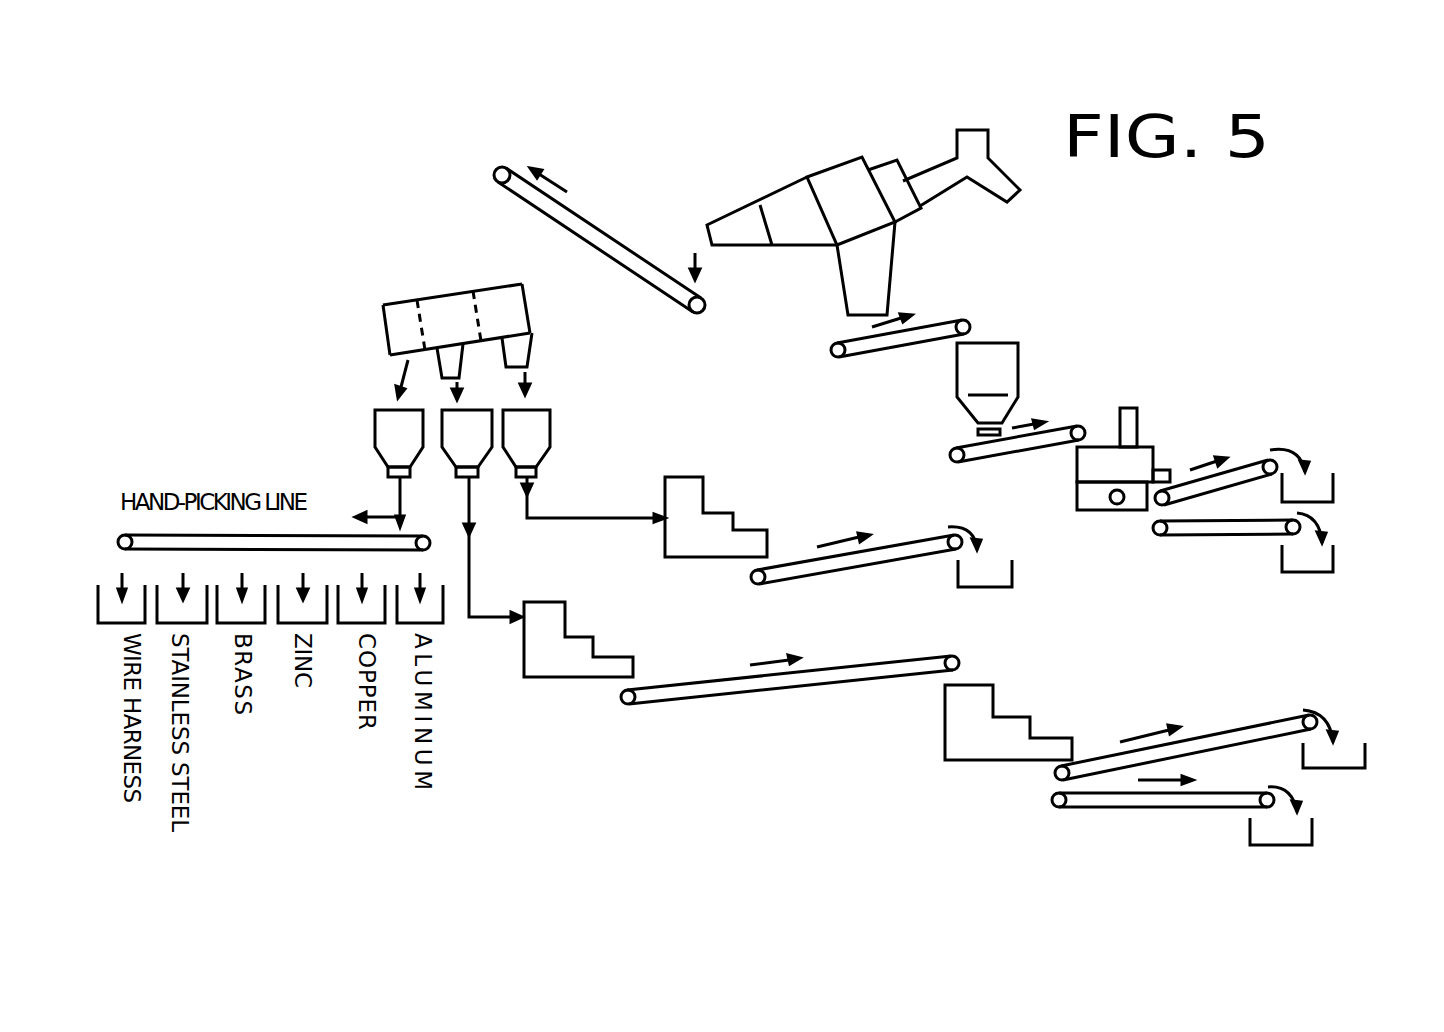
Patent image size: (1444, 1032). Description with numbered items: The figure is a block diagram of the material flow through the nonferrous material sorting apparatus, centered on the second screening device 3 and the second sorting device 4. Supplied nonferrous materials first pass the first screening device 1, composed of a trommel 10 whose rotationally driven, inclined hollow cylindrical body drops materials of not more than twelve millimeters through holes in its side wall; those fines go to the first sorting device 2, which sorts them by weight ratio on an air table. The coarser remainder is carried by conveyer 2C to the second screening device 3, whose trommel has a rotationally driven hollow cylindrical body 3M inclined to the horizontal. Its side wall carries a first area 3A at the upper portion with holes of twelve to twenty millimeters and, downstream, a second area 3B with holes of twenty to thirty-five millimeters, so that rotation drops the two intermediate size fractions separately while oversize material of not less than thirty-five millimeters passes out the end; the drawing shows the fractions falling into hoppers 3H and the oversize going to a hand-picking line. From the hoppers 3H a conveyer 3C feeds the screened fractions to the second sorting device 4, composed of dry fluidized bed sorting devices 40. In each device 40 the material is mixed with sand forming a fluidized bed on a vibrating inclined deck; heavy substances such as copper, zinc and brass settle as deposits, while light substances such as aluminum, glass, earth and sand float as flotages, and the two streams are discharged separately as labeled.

The first screening device 1 is at (727, 190).
The trommel 10 is at (838, 183).
The first sorting device 2 is at (1147, 378).
The conveyor 2C is at (1057, 423).
The second screening device 3 is at (430, 282).
The first area 3A is at (517, 312).
The second area 3B is at (458, 320).
The hollow cylindrical body 3M is at (402, 328).
The hoppers 3H is at (405, 432).
The conveyer 3C is at (400, 487).
The second sorting device 4 is at (897, 470).
The dry fluidized bed sorting device 40 is at (720, 472).